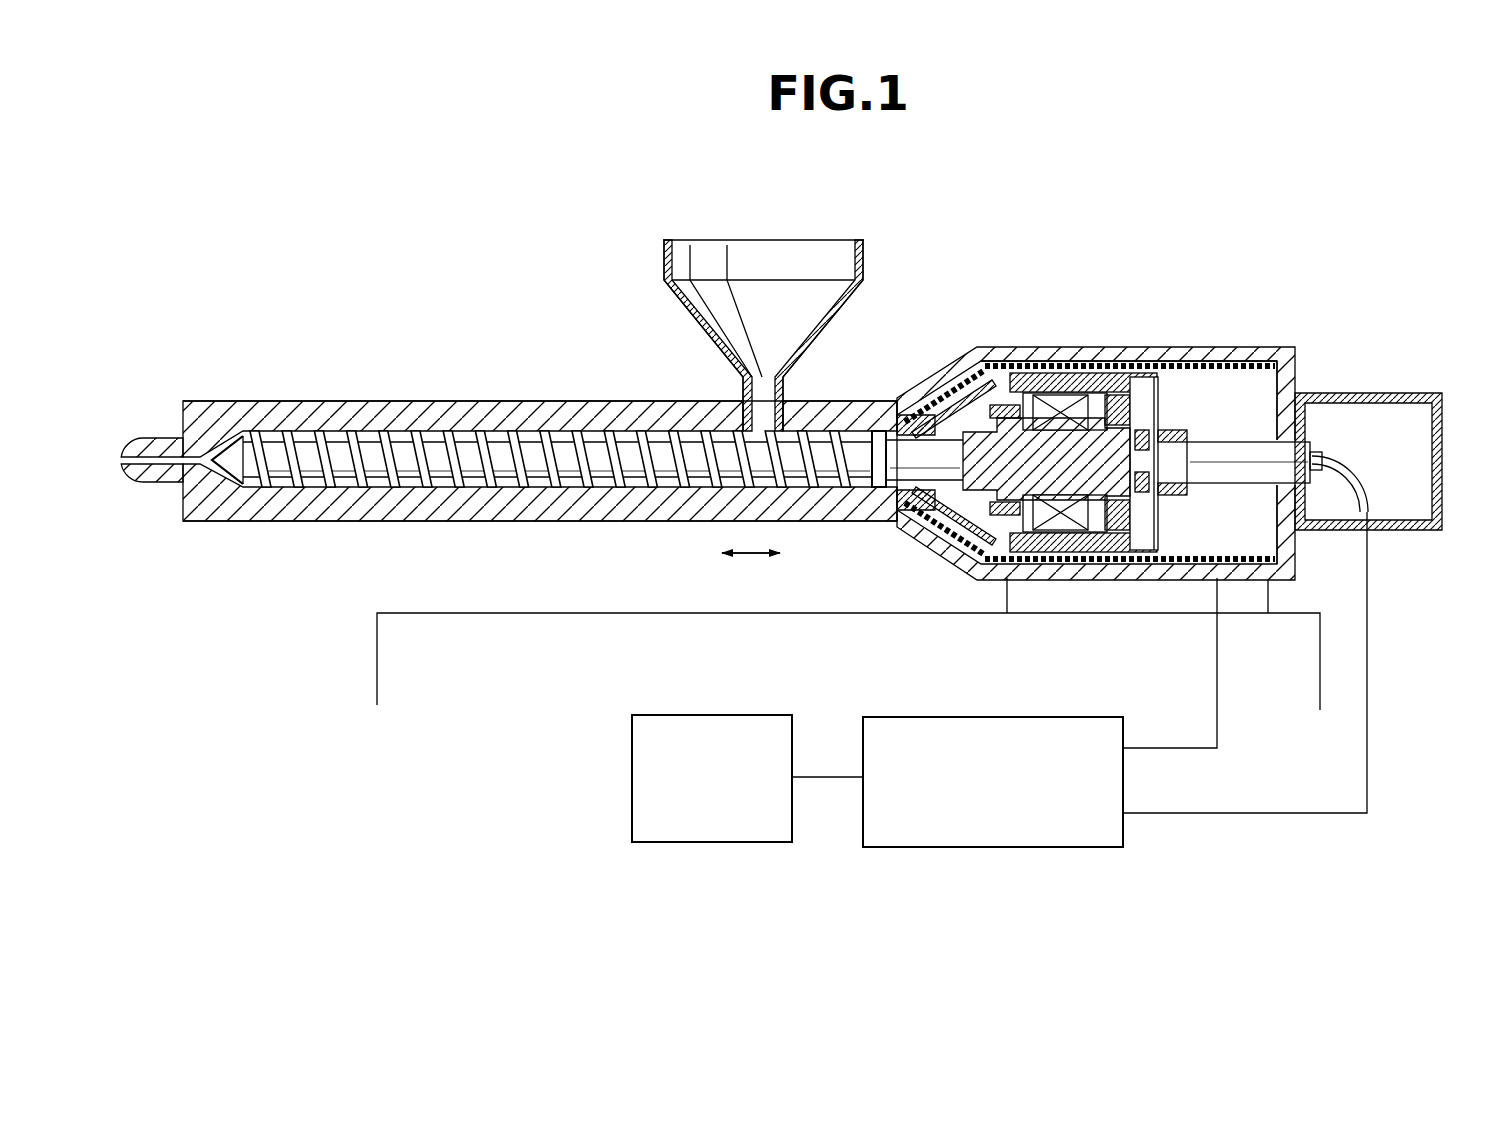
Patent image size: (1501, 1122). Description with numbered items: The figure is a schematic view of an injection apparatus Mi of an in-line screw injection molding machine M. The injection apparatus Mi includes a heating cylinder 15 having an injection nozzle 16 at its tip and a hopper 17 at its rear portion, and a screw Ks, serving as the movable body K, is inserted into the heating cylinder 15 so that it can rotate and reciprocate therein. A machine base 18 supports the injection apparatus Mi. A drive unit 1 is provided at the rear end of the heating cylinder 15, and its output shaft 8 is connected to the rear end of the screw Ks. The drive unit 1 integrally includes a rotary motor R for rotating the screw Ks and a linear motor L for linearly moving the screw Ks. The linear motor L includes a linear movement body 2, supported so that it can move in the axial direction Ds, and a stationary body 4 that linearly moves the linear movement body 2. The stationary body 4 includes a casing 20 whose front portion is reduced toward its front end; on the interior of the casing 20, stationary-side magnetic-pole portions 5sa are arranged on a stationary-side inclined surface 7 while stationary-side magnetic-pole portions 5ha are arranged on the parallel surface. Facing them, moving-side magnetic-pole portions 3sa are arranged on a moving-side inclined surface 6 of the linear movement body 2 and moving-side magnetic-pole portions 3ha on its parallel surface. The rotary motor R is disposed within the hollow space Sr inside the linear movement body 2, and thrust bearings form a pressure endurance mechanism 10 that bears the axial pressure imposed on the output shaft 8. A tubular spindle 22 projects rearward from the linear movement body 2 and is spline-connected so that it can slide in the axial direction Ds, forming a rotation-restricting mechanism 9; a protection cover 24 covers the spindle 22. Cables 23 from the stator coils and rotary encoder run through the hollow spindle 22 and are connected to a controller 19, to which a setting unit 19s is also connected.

The drive unit 1 is at (1307, 370).
The linear movement body 2 is at (1180, 390).
The moving-side magnetic-pole portion 3sa is at (973, 387).
The moving-side magnetic-pole portion 3ha is at (1087, 363).
The stationary body 4 is at (1163, 585).
The stationary-side magnetic-pole portion 5sa is at (950, 578).
The stationary-side magnetic-pole portion 5ha is at (1060, 578).
The moving-side inclined surface 6 is at (925, 537).
The stationary-side inclined surface 7 is at (993, 350).
The output shaft 8 is at (910, 417).
The rotation-restricting mechanism 9 is at (1297, 490).
The pressure endurance mechanism 10 is at (1152, 400).
The heating cylinder 15 is at (322, 401).
The injection nozzle 16 is at (152, 438).
The hopper 17 is at (747, 240).
The machine base 18 is at (552, 612).
The controller 19 is at (1038, 847).
The setting unit 19s is at (740, 842).
The casing 20 is at (1063, 347).
The spindle 22 is at (1310, 443).
The cables 23 is at (1385, 505).
The protection cover 24 is at (1440, 402).
The movable body K is at (433, 435).
The screw Ks is at (580, 402).
The hollow space Sr is at (958, 402).
The rotary motor R is at (1165, 522).
The in-line screw injection molding machine M is at (1232, 277).
The linear motor L is at (1267, 343).
The injection apparatus Mi is at (615, 272).
The axial direction Ds is at (751, 585).